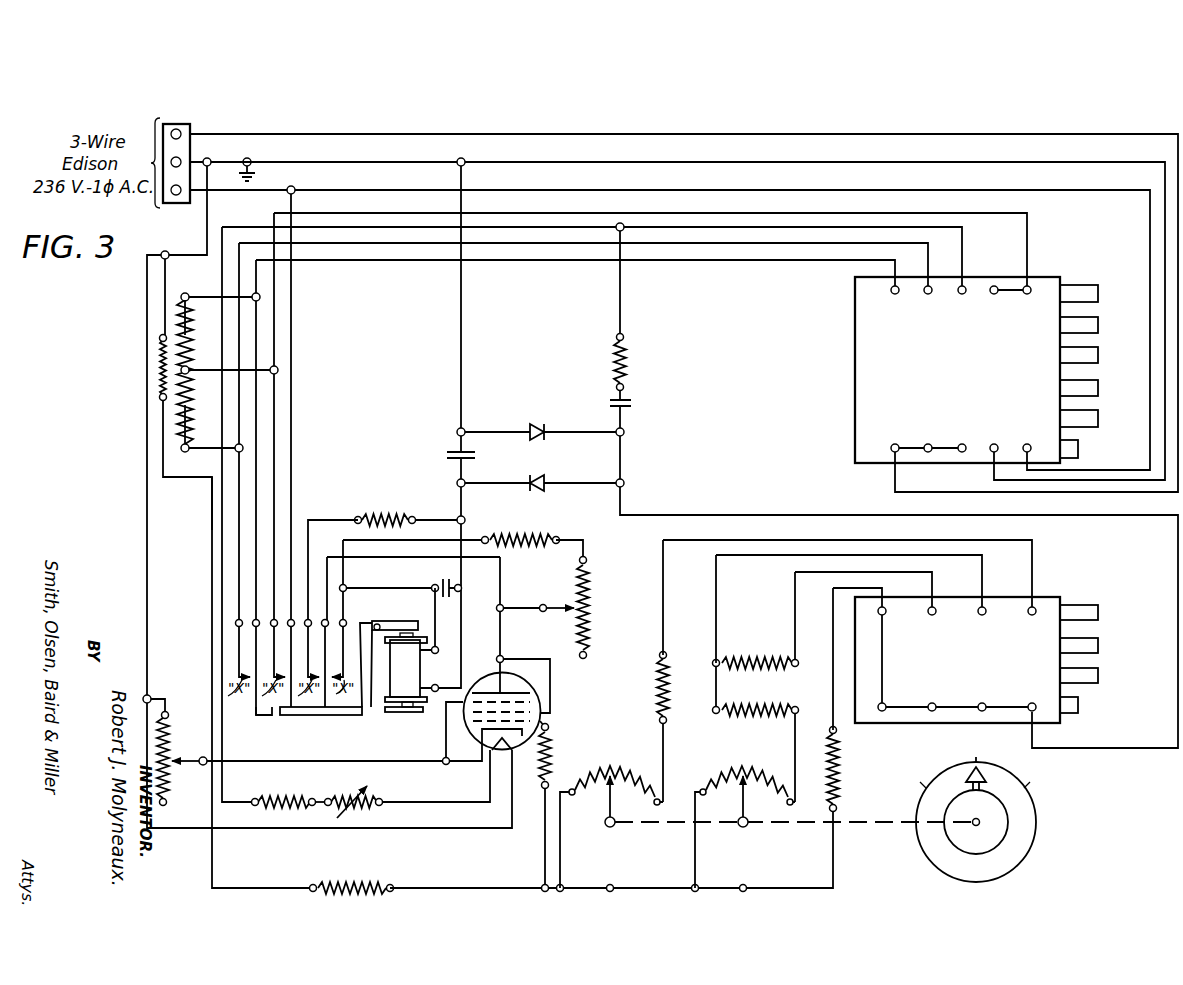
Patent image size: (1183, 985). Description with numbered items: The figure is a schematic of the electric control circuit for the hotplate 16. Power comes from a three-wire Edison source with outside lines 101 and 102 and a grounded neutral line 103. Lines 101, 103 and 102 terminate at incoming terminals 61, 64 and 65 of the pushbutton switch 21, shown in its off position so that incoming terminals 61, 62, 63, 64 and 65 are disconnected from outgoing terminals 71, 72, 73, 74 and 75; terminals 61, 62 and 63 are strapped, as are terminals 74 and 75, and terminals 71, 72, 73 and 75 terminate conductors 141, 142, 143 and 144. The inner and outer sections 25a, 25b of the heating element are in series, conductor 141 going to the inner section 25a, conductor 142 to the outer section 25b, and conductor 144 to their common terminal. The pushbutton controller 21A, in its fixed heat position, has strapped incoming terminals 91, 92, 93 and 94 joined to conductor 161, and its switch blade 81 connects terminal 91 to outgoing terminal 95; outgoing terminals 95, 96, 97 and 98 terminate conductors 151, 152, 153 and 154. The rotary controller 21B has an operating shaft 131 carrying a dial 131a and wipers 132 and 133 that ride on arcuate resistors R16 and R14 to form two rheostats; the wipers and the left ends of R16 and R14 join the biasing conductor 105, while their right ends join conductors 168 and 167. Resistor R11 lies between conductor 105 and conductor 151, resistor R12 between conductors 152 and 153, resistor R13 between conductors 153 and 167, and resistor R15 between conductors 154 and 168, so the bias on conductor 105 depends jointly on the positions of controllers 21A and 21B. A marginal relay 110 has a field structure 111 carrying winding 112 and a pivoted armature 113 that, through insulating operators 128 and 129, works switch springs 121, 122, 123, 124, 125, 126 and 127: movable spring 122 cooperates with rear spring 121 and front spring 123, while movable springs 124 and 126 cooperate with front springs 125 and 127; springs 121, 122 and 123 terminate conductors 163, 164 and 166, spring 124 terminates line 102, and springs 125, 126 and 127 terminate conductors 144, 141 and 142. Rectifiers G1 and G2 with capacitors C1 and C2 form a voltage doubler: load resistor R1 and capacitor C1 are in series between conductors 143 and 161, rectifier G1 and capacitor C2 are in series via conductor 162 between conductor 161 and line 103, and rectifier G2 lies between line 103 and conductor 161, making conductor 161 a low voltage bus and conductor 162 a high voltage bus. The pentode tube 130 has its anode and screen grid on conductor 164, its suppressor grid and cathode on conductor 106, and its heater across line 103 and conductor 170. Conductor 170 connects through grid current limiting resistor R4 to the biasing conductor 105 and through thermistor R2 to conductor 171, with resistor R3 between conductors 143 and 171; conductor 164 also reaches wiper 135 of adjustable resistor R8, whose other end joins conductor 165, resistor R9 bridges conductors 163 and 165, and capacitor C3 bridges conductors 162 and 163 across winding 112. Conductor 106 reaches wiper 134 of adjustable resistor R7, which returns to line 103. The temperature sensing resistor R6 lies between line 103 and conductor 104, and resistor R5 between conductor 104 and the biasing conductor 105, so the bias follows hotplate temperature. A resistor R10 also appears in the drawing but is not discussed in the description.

The outside line 101 is at (278, 124).
The outside line 102 is at (276, 180).
The grounded neutral line 103 is at (276, 152).
The conductor 104 is at (210, 520).
The biasing conductor 105 is at (478, 878).
The conductor 106 is at (326, 758).
The hotplate 16 is at (191, 288).
The inner section of heating element 25a is at (177, 315).
The outer section of heating element 25b is at (178, 410).
The load resistor R1 is at (628, 365).
The thermistor resistor R2 is at (380, 792).
The resistor R3 is at (286, 793).
The grid current limiting resistor R4 is at (555, 767).
The resistor R5 is at (368, 874).
The temperature sensing resistor R6 is at (157, 350).
The adjustable resistor R7 is at (176, 732).
The adjustable resistor R8 is at (592, 620).
The resistor R9 is at (523, 537).
The resistor R10 is at (392, 518).
The resistor R11 is at (842, 790).
The resistor R12 is at (748, 658).
The resistor R13 is at (768, 702).
The arcuately arranged resistor R14 is at (788, 762).
The resistor R15 is at (672, 677).
The arcuately arranged resistor R16 is at (650, 756).
The capacitor C1 is at (636, 405).
The capacitor C2 is at (448, 450).
The capacitor C3 is at (444, 582).
The rectifier G1 is at (544, 482).
The rectifier G2 is at (542, 428).
The electromagnetic relay 110 is at (340, 736).
The field structure 111 is at (414, 713).
The operating winding 112 is at (410, 682).
The armature 113 is at (424, 615).
The rear switch spring 121 is at (346, 649).
The movable switch spring 122 is at (331, 664).
The front switch spring 123 is at (314, 649).
The movable switch spring 124 is at (297, 664).
The front switch spring 125 is at (280, 649).
The movable switch spring 126 is at (262, 668).
The front switch spring 127 is at (245, 649).
The insulating operator 128 is at (288, 717).
The insulating operator 129 is at (260, 718).
The electron discharge tube 130 is at (540, 690).
The rotary operating shaft 131 is at (855, 828).
The rotary dial 131a is at (1036, 818).
The wiper 132 is at (609, 806).
The wiper 133 is at (742, 806).
The wiper 134 is at (196, 766).
The wiper 135 is at (553, 588).
The conductor 141 is at (836, 254).
The conductor 142 is at (836, 238).
The conductor 143 is at (836, 222).
The conductor 144 is at (836, 206).
The conductor 151 is at (883, 586).
The conductor 152 is at (916, 570).
The conductor 153 is at (937, 554).
The conductor 154 is at (962, 538).
The low voltage supply bus conductor 161 is at (621, 474).
The high voltage supply bus conductor 162 is at (520, 486).
The conductor 163 is at (420, 531).
The conductor 164 is at (390, 548).
The conductor 165 is at (582, 547).
The conductor 166 is at (353, 516).
The conductor 167 is at (792, 734).
The conductor 168 is at (662, 726).
The conductor 170 is at (455, 794).
The conductor 171 is at (344, 792).
The pushbutton switch 21 is at (970, 370).
The pushbutton controller 21A is at (977, 674).
The rotary temperature controller 21B is at (1070, 864).
The switch blade 81 is at (885, 659).
The incoming terminal 61 is at (924, 437).
The incoming terminal 62 is at (929, 437).
The incoming terminal 63 is at (963, 437).
The incoming terminal 64 is at (995, 437).
The incoming terminal 65 is at (1027, 437).
The outgoing terminal 71 is at (898, 302).
The outgoing terminal 72 is at (929, 302).
The outgoing terminal 73 is at (963, 302).
The outgoing terminal 74 is at (1005, 302).
The outgoing terminal 75 is at (1027, 302).
The incoming terminal 91 is at (947, 698).
The incoming terminal 92 is at (931, 697).
The incoming terminal 93 is at (981, 697).
The incoming terminal 94 is at (1031, 697).
The outgoing terminal 95 is at (873, 622).
The outgoing terminal 96 is at (933, 622).
The outgoing terminal 97 is at (983, 622).
The outgoing terminal 98 is at (1033, 622).